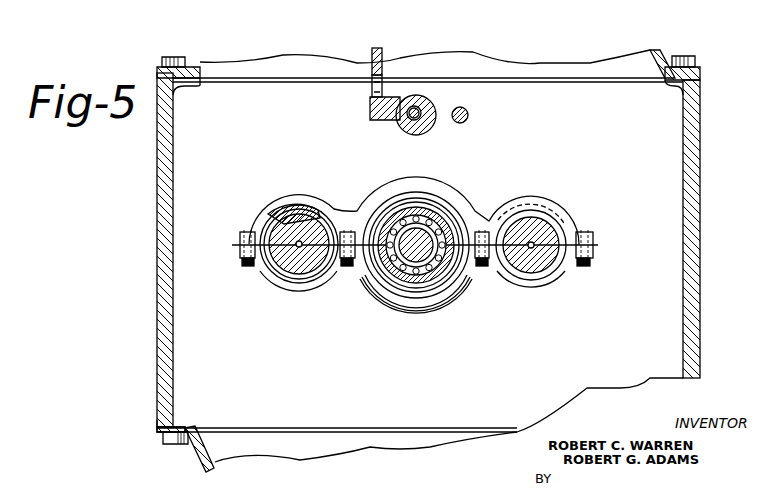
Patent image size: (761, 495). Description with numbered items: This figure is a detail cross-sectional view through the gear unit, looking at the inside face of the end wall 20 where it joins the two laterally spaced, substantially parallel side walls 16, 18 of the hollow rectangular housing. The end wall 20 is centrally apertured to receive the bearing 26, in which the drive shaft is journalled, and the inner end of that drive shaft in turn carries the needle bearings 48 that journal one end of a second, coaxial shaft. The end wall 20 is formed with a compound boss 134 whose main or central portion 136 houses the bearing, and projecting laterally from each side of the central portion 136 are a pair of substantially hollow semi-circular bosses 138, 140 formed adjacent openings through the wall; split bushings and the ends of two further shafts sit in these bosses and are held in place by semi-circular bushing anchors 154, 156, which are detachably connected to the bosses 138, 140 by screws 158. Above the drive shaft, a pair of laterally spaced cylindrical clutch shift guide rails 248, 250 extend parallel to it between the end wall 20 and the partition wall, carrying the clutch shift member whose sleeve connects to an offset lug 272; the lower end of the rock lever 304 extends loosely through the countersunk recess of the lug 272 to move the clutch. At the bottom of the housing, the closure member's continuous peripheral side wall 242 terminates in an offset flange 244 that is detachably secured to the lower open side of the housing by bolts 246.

The side wall 16 is at (700, 232).
The side wall 18 is at (157, 238).
The end wall 20 is at (673, 158).
The bearing 26 is at (398, 290).
The needle bearings 48 is at (420, 300).
The compound boss 134 is at (413, 240).
The central portion 136 is at (412, 174).
The semi-circular boss 138 is at (252, 198).
The semi-circular boss 140 is at (540, 183).
The bushing anchor 154 is at (596, 250).
The bushing anchor 156 is at (240, 248).
The screws 158 is at (246, 268).
The peripheral side wall 242 is at (212, 450).
The flange 244 is at (155, 432).
The bolts 246 is at (181, 447).
The clutch shift guide rail 248 is at (468, 114).
The clutch shift guide rail 250 is at (406, 133).
The offset lug 272 is at (385, 122).
The rock lever 304 is at (372, 60).